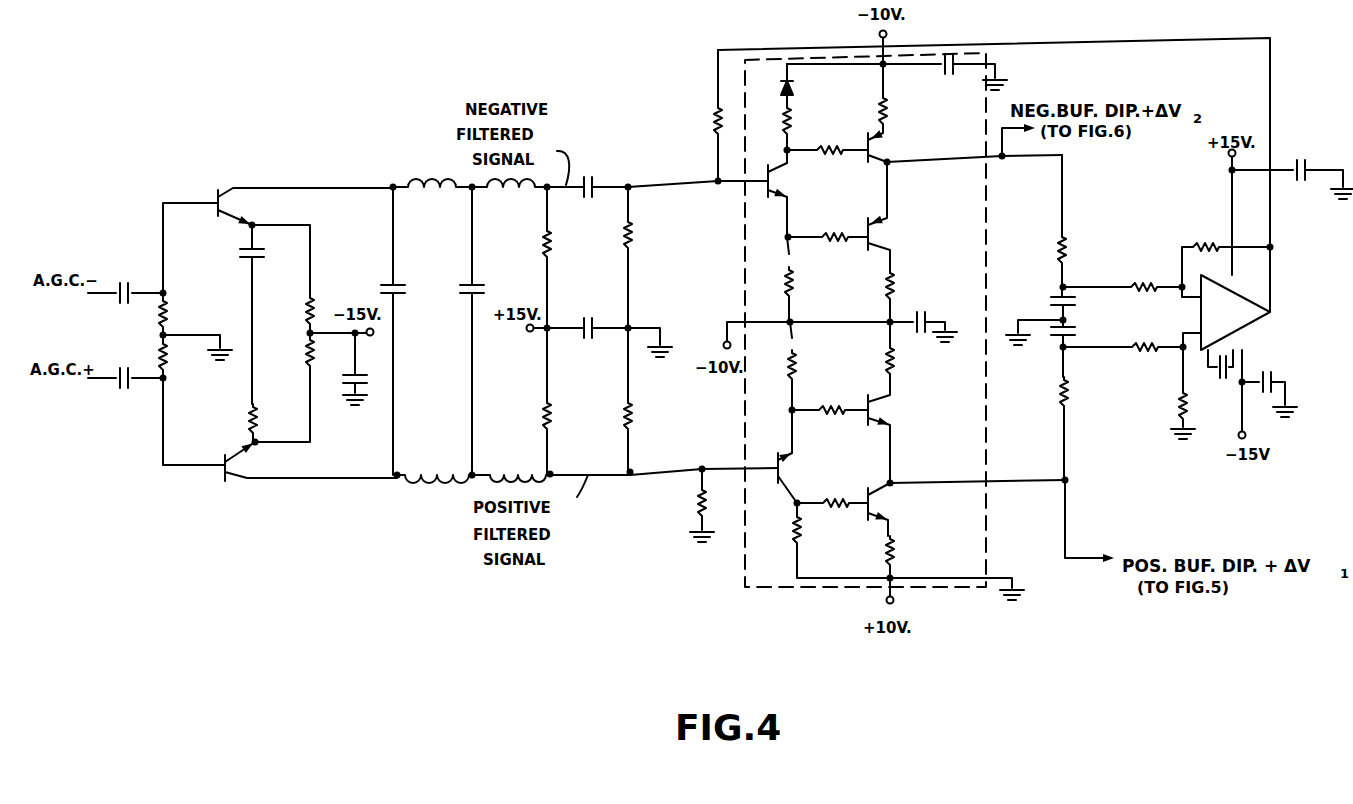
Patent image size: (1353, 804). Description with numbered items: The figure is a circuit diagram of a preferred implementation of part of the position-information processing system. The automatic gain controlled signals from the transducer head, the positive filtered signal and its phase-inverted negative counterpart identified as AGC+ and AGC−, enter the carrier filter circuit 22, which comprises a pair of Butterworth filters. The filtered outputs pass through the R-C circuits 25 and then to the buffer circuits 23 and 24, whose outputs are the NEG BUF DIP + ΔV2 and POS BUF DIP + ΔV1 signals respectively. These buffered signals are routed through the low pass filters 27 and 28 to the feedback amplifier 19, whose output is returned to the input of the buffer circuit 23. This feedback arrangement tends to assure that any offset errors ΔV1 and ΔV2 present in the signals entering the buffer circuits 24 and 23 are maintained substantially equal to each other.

The feedback amplifier 19 is at (1250, 326).
The carrier filter circuit 22 is at (372, 487).
The buffer circuit 23 is at (705, 117).
The buffer circuit 24 is at (730, 573).
The R-C circuits 25 is at (597, 268).
The low pass filter 27 is at (1080, 259).
The low pass filter 28 is at (1096, 420).